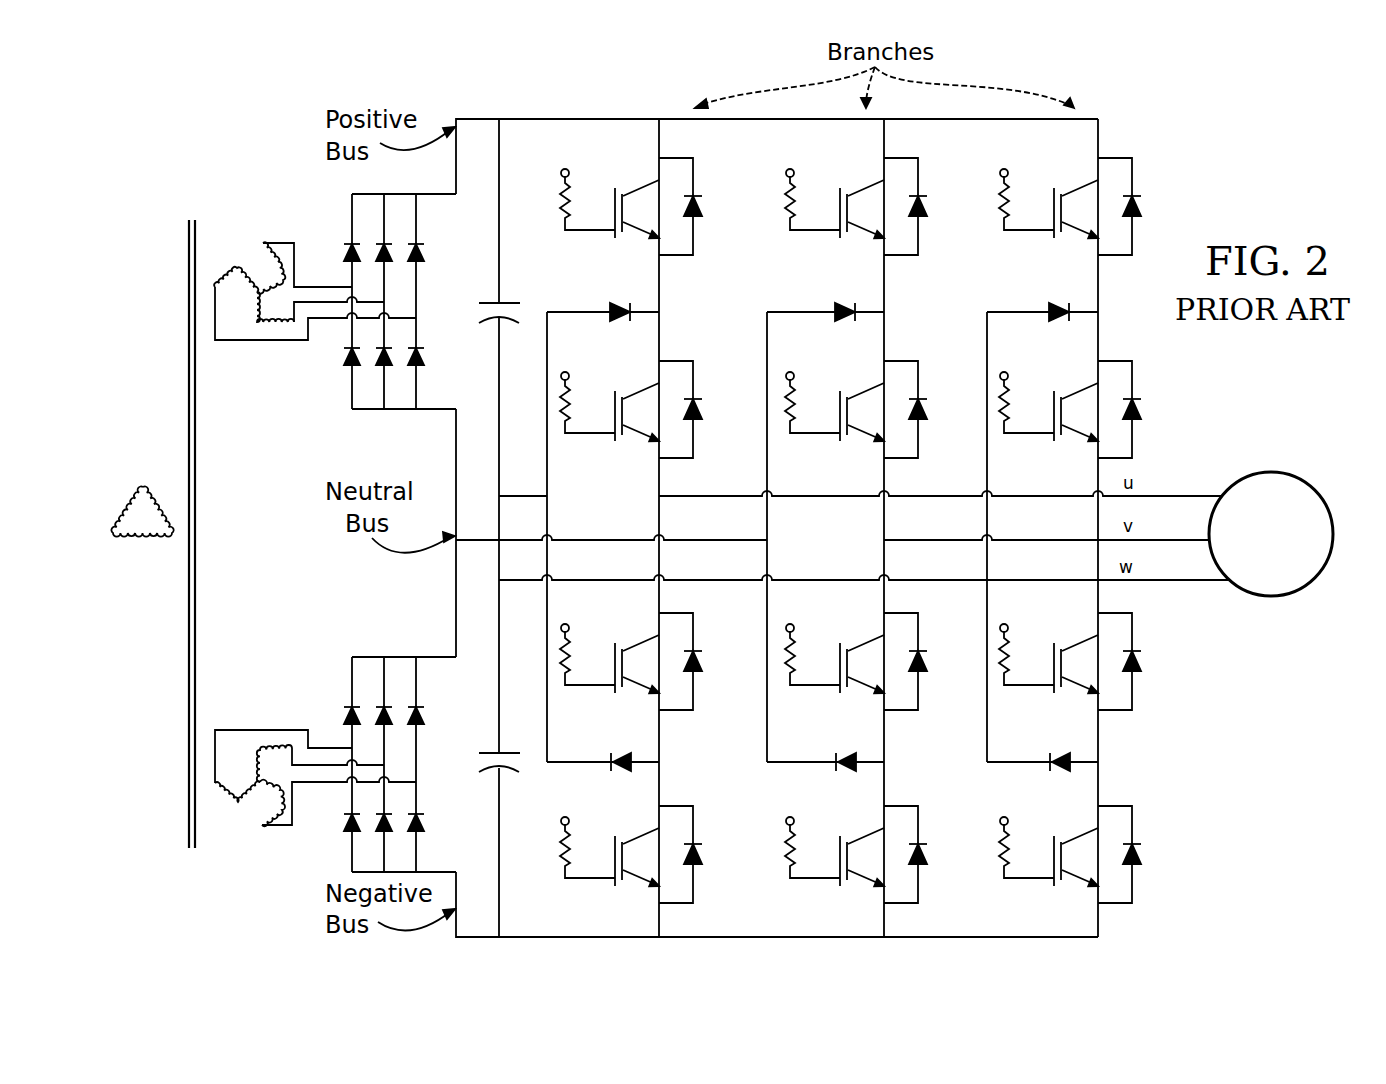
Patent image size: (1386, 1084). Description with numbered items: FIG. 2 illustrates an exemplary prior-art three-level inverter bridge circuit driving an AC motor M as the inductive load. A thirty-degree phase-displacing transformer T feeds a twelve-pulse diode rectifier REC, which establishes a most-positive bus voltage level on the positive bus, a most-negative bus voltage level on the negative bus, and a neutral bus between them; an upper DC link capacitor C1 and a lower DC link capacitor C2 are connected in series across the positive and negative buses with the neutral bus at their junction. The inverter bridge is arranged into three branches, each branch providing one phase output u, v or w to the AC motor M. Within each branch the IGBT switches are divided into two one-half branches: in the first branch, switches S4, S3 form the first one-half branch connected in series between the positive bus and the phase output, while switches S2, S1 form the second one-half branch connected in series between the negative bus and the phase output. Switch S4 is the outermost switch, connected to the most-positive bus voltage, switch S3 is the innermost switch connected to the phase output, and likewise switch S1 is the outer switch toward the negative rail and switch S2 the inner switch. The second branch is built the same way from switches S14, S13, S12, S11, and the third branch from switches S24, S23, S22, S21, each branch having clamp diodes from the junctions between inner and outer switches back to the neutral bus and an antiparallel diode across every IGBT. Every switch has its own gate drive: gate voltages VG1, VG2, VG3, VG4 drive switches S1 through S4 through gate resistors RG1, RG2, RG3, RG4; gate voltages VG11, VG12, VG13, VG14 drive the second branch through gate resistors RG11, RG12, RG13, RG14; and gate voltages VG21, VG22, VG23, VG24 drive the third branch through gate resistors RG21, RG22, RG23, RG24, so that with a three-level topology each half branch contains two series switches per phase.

The IGBT switch S1 is at (658, 854).
The IGBT switch S2 is at (658, 661).
The IGBT switch S3 is at (658, 409).
The IGBT switch S4 is at (658, 206).
The IGBT switch S11 is at (883, 854).
The IGBT switch S12 is at (883, 661).
The IGBT switch S13 is at (883, 409).
The IGBT switch S14 is at (883, 206).
The IGBT switch S21 is at (1097, 854).
The IGBT switch S22 is at (1097, 661).
The IGBT switch S23 is at (1097, 409).
The IGBT switch S24 is at (1097, 206).
The gate resistor RG1 is at (587, 851).
The gate resistor RG2 is at (587, 658).
The gate resistor RG3 is at (587, 406).
The gate resistor RG4 is at (587, 203).
The gate resistor RG11 is at (812, 851).
The gate resistor RG12 is at (812, 658).
The gate resistor RG13 is at (812, 406).
The gate resistor RG14 is at (812, 203).
The gate resistor RG21 is at (1026, 851).
The gate resistor RG22 is at (1026, 658).
The gate resistor RG23 is at (1026, 406).
The gate resistor RG24 is at (1026, 203).
The gate voltage VG1 is at (568, 808).
The gate voltage VG2 is at (568, 615).
The gate voltage VG3 is at (568, 363).
The gate voltage VG4 is at (568, 160).
The gate voltage VG11 is at (796, 808).
The gate voltage VG12 is at (796, 615).
The gate voltage VG13 is at (796, 363).
The gate voltage VG14 is at (796, 160).
The gate voltage VG21 is at (1010, 808).
The gate voltage VG22 is at (1010, 615).
The gate voltage VG23 is at (1010, 363).
The gate voltage VG24 is at (1010, 160).
The 30-degree phase-displacing transformer T is at (263, 493).
The 12-pulse diode rectifier REC is at (400, 533).
The upper DC link capacitor C1 is at (499, 313).
The lower DC link capacitor C2 is at (499, 762).
The AC motor M is at (1271, 534).